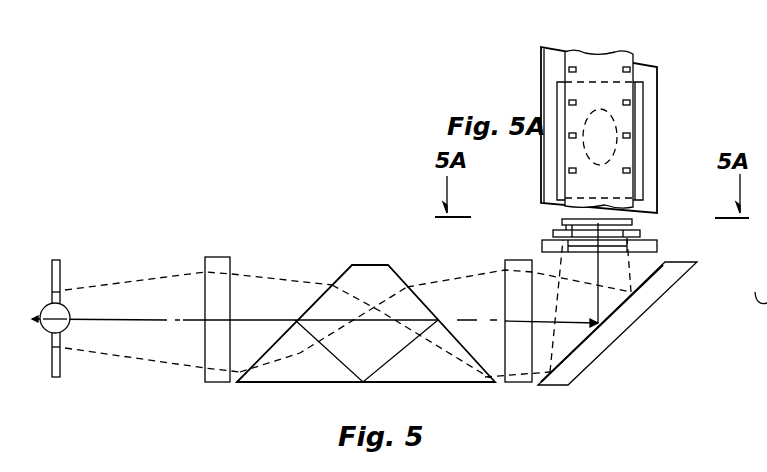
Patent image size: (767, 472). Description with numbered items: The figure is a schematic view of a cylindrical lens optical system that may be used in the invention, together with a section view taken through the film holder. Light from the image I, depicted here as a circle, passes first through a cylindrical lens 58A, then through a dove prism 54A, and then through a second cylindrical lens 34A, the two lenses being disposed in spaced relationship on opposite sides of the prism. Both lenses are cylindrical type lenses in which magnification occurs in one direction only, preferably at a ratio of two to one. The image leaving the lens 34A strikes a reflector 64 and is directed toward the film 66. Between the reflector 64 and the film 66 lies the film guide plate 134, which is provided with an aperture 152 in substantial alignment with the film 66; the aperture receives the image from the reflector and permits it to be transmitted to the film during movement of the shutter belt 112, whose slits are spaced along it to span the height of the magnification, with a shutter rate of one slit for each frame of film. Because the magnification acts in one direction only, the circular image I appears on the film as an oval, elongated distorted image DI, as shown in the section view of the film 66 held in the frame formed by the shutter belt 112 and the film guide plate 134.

In FIG. 5, the image I is at (60, 312).
In FIG. 5, the cylindrical lens 58A is at (218, 363).
In FIG. 5, the dove prism 54A is at (377, 277).
In FIG. 5, the cylindrical lens 34A is at (515, 382).
In FIG. 5, the reflector 64 is at (613, 330).
In FIG. 5A, the film 66 is at (602, 62).
In FIG. 5, the film 66 is at (632, 222).
In FIG. 5, the aperture 152 is at (565, 225).
In FIG. 5A, the film guide plate 134 is at (640, 97).
In FIG. 5, the film guide plate 134 is at (638, 233).
In FIG. 5A, the shutter belt 112 is at (650, 115).
In FIG. 5, the shutter belt 112 is at (652, 245).
In FIG. 5A, the distorted image DI is at (602, 143).